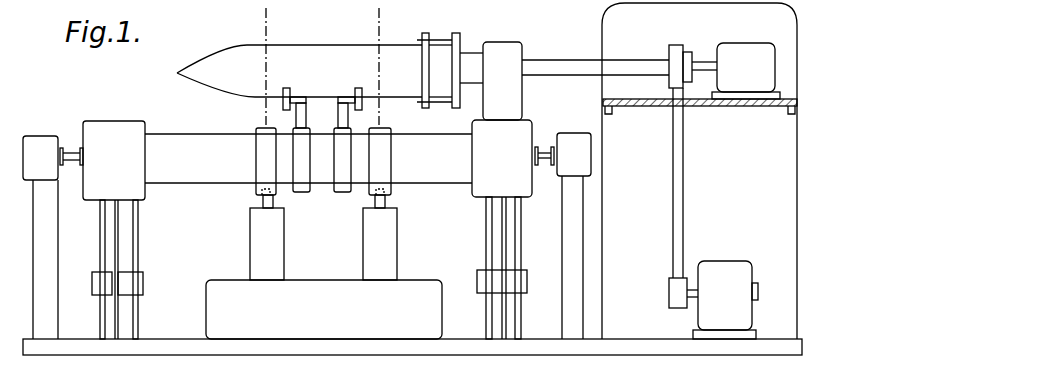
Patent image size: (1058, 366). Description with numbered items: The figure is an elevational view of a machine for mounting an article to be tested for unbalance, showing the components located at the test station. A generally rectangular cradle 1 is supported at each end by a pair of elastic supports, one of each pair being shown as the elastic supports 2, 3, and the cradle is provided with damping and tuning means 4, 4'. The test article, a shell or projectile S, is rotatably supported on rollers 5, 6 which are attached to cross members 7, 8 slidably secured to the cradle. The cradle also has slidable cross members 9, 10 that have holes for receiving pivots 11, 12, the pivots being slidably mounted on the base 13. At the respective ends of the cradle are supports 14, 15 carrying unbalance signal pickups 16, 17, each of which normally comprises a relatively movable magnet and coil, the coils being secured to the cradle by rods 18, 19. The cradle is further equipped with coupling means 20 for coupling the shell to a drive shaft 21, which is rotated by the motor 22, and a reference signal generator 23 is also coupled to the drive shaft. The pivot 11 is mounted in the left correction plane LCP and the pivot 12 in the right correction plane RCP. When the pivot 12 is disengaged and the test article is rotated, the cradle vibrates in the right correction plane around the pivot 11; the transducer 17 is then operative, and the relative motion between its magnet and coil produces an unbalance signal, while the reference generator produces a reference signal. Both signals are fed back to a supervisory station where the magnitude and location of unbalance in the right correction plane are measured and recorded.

The cradle 1 is at (128, 120).
The elastic support 2 is at (118, 228).
The elastic support 3 is at (506, 233).
The damping and tuning means 4 is at (128, 292).
The damping and tuning means 4' is at (508, 297).
The roller 5 is at (283, 100).
The roller 6 is at (362, 105).
The cross member 7 is at (302, 192).
The cross member 8 is at (342, 192).
The slidable cross member 9 is at (258, 163).
The slidable cross member 10 is at (389, 163).
The pivot 11 is at (262, 201).
The pivot 12 is at (388, 201).
The base 13 is at (415, 280).
The support 14 is at (55, 258).
The support 15 is at (560, 250).
The unbalance signal pickup 16 is at (36, 136).
The unbalance signal pickup 17 is at (573, 133).
The rod 18 is at (70, 151).
The rod 19 is at (545, 133).
The coupling means 20 is at (459, 33).
The drive shaft 21 is at (579, 55).
The motor 22 is at (722, 261).
The reference signal generator 23 is at (758, 34).
The shell or projectile S is at (337, 45).
The left correction plane LCP is at (266, 18).
The right correction plane RCP is at (381, 18).